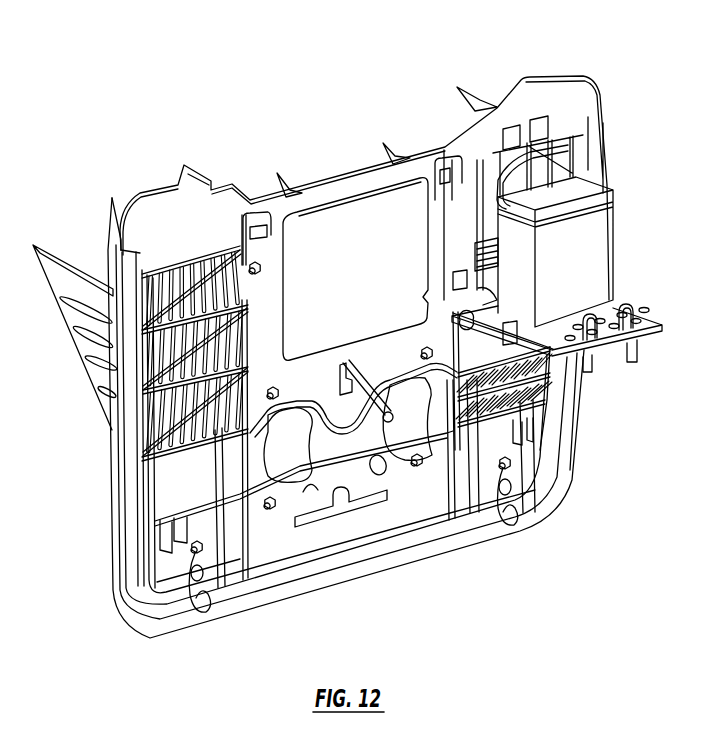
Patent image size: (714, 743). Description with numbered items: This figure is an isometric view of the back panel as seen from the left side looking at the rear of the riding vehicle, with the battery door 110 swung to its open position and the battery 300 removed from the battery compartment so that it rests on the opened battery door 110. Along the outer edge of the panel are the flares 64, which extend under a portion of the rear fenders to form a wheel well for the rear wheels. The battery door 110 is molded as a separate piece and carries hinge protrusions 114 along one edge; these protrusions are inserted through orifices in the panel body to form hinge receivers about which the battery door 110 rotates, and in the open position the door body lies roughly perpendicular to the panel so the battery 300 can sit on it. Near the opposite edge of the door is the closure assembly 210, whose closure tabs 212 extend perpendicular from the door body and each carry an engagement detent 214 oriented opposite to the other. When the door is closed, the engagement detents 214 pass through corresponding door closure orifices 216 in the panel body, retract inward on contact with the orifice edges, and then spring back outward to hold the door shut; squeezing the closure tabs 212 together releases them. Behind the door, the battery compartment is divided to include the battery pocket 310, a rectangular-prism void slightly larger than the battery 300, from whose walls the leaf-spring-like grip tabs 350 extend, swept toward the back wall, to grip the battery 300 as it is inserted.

The flares 64 is at (63, 280).
The battery door 110 is at (622, 292).
The hinge protrusions 114 is at (478, 290).
The closure assembly 210 is at (620, 360).
The closure tabs 212 is at (637, 357).
The engagement detents 214 is at (637, 310).
The door closure orifices 216 is at (513, 127).
The battery 300 is at (597, 240).
The battery pocket 310 is at (560, 167).
The grip tabs 350 is at (550, 167).